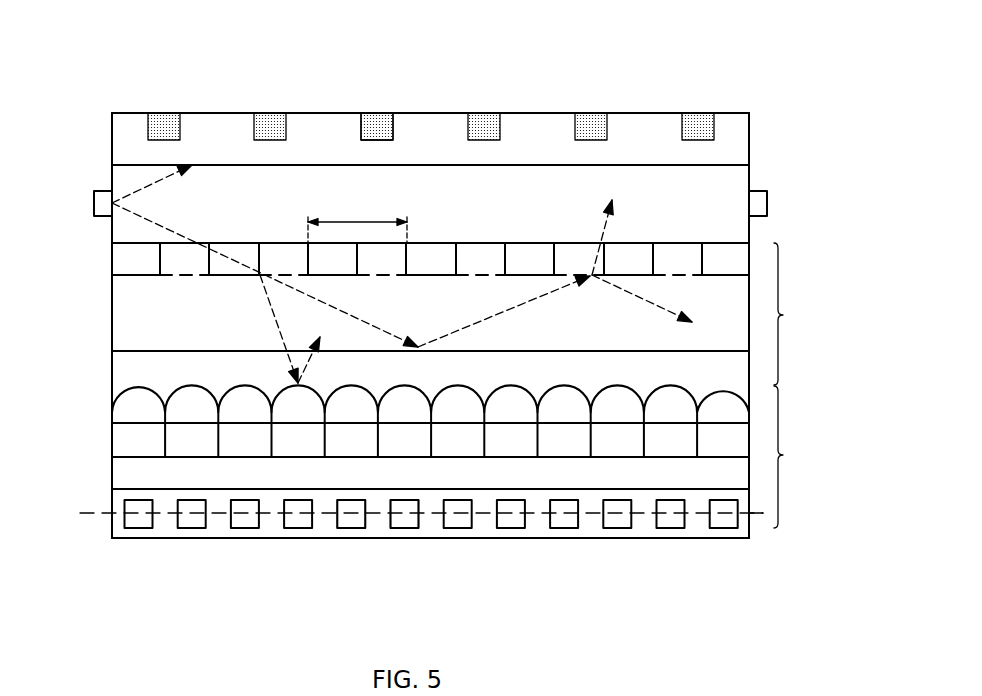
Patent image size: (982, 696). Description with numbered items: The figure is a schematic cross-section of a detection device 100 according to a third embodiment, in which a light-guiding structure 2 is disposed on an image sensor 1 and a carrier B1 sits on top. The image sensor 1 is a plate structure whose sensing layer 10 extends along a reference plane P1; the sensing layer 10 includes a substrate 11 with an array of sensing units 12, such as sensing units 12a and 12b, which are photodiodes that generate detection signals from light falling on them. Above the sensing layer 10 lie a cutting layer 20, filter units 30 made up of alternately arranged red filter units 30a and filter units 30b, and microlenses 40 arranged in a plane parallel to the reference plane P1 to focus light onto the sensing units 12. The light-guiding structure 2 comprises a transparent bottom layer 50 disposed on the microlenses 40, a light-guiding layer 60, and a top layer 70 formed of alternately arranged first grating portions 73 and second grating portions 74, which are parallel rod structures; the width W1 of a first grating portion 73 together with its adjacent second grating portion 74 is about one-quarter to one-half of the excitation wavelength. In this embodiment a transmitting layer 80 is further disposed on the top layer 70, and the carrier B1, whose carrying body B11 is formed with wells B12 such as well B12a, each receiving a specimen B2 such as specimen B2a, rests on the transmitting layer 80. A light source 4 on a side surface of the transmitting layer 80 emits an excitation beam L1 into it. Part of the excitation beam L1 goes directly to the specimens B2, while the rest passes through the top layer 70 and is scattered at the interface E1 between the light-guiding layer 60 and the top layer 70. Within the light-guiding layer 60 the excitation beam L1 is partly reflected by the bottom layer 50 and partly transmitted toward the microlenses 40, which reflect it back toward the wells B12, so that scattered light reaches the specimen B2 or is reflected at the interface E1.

The detection device 100 is at (790, 28).
The image sensor 1 is at (789, 457).
The light-guiding structure 2 is at (788, 314).
The light source 4 is at (94, 205).
The sensing layer 10 is at (112, 528).
The substrate 11 is at (118, 500).
The sensing units 12 is at (139, 528).
The sensing unit 12a is at (352, 528).
The sensing unit 12b is at (405, 528).
The cutting layer 20 is at (118, 470).
The filter units 30 is at (118, 438).
The red filter units 30a is at (336, 437).
The filter units 30b is at (424, 437).
The microlenses 40 is at (125, 406).
The bottom layer 50 is at (118, 373).
The light-guiding layer 60 is at (118, 342).
The top layer 70 is at (112, 258).
The first grating portions 73 is at (140, 278).
The second grating portions 74 is at (186, 278).
The transmitting layer 80 is at (118, 172).
The carrier B1 is at (752, 150).
The carrying body B11 is at (752, 118).
The wells B12 is at (500, 127).
The well B12a is at (361, 127).
The specimen B2 is at (481, 118).
The specimen B2a is at (376, 118).
The interface E1 is at (728, 255).
The excitation beam L1 is at (158, 182).
The reference plane P1 is at (758, 516).
The width W1 is at (357, 217).